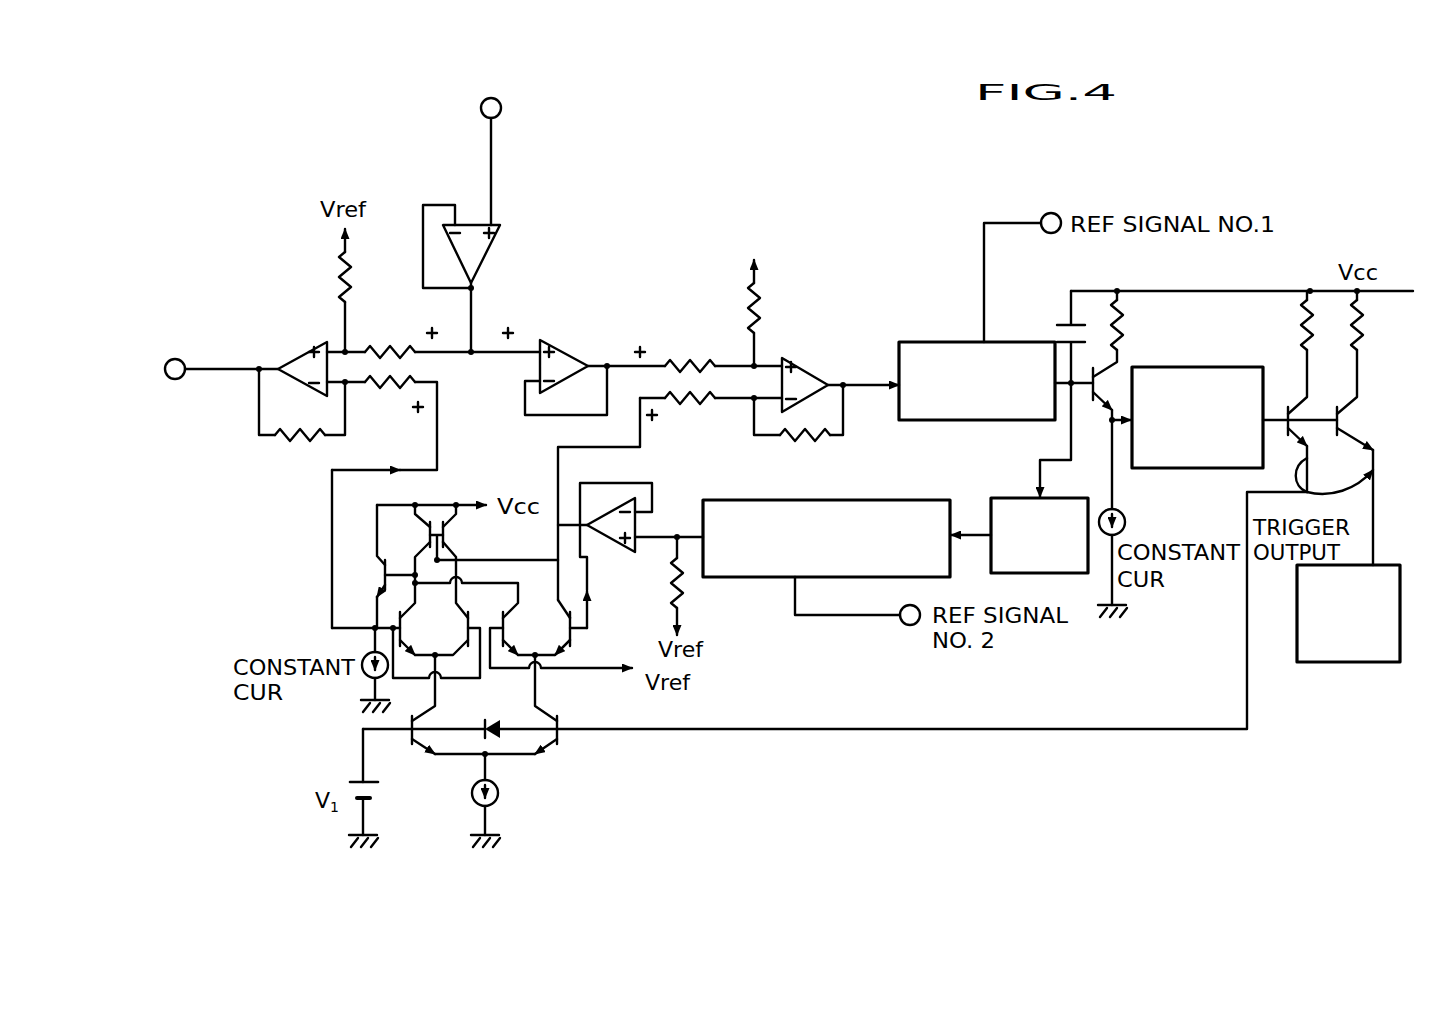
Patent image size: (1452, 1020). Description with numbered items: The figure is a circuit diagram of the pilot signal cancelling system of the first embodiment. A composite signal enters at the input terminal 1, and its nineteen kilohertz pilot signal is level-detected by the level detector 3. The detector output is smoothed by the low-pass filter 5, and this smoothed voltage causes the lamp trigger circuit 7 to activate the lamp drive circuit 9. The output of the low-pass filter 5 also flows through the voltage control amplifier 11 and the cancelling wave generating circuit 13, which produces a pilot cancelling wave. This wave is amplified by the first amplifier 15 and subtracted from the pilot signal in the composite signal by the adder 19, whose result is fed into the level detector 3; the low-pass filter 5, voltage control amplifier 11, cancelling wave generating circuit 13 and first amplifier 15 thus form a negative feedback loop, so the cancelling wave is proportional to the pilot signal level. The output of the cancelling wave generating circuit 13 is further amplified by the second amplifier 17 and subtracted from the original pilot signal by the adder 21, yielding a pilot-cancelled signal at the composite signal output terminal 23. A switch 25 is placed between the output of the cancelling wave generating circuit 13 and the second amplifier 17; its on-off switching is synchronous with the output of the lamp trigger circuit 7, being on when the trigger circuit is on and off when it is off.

The input terminal 1 is at (488, 97).
The level detector 3 is at (940, 341).
The low-pass filter 5 is at (1041, 394).
The lamp trigger circuit 7 is at (1255, 367).
The lamp drive circuit 9 is at (1400, 565).
The voltage control amplifier 11 is at (1010, 498).
The cancelling wave generating circuit 13 is at (916, 500).
The first amplifier 15 is at (752, 309).
The second amplifier 17 is at (265, 276).
The adder 19 is at (643, 222).
The adder 21 is at (247, 155).
The composite signal output terminal 23 is at (181, 378).
The switch 25 is at (494, 751).